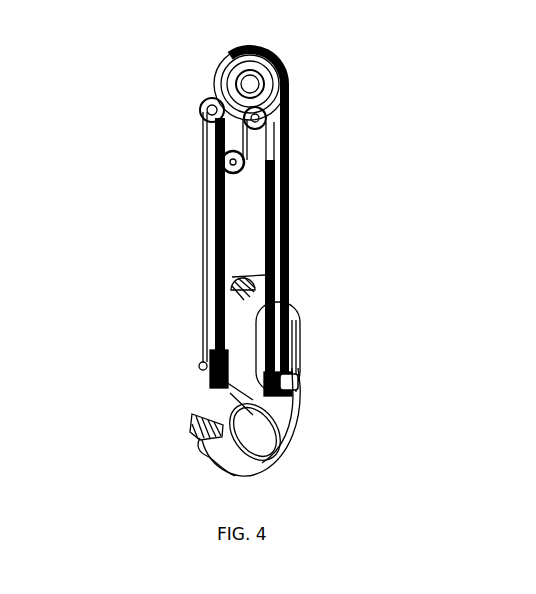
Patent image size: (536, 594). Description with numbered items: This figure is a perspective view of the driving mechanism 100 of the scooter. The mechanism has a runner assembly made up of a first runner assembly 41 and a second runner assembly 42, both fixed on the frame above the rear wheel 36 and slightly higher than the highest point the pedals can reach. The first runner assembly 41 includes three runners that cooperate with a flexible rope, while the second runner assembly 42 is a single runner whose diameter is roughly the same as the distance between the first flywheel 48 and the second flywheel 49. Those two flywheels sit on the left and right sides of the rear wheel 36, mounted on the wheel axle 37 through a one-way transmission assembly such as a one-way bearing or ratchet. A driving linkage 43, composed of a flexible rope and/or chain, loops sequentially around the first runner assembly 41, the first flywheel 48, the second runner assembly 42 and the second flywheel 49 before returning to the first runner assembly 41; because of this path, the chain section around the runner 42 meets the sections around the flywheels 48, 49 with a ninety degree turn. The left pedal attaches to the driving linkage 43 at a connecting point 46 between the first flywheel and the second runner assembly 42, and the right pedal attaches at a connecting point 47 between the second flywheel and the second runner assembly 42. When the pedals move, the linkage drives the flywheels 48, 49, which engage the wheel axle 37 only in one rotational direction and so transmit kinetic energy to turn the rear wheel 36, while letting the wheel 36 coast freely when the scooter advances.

The driving mechanism 100 is at (372, 91).
The second runner assembly 42 is at (221, 64).
The driving linkage 43 is at (289, 203).
The first runner assembly 41 is at (197, 98).
The connecting point 47 is at (221, 148).
The connecting point 46 is at (300, 338).
The first flywheel 48 is at (300, 378).
The second flywheel 49 is at (202, 371).
The wheel axle 37 is at (302, 395).
The rear wheel 36 is at (205, 457).